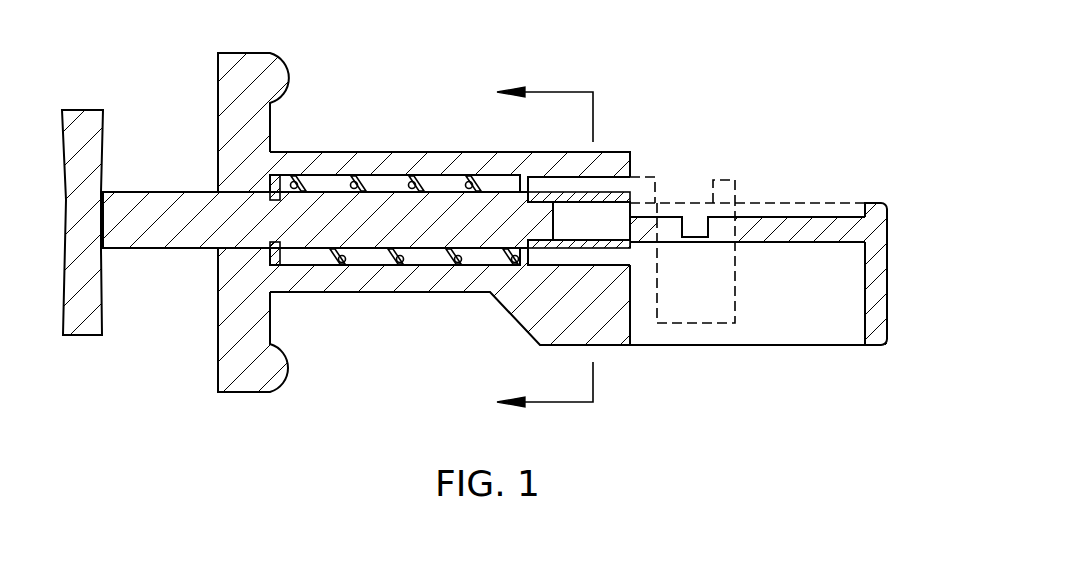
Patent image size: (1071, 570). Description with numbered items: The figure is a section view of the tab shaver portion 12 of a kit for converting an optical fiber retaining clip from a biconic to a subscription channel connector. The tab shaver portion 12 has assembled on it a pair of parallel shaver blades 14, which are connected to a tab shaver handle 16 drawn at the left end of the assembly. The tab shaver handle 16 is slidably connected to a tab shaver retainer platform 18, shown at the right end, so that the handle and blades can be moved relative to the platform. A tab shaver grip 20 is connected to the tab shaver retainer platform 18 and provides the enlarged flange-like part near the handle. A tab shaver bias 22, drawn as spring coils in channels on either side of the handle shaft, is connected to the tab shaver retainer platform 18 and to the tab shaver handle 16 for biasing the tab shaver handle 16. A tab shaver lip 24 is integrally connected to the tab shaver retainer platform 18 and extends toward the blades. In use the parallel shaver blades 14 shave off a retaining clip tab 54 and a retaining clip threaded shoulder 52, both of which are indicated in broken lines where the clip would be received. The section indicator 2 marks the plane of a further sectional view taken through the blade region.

The tab shaver portion 12 is at (590, 75).
The shaver blades 14 is at (597, 195).
The tab shaver handle 16 is at (72, 320).
The tab shaver retainer platform 18 is at (847, 232).
The tab shaver grip 20 is at (253, 385).
The tab shaver bias 22 is at (340, 260).
The tab shaver lip 24 is at (878, 203).
The retaining clip threaded shoulder 52 is at (733, 295).
The retaining clip tab 54 is at (722, 181).
The section line 2- 2 is at (531, 246).